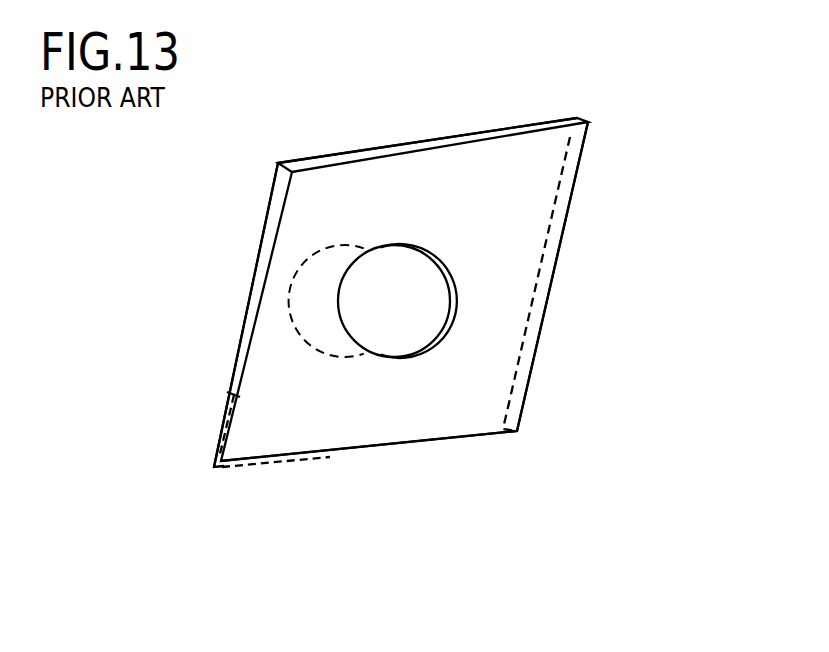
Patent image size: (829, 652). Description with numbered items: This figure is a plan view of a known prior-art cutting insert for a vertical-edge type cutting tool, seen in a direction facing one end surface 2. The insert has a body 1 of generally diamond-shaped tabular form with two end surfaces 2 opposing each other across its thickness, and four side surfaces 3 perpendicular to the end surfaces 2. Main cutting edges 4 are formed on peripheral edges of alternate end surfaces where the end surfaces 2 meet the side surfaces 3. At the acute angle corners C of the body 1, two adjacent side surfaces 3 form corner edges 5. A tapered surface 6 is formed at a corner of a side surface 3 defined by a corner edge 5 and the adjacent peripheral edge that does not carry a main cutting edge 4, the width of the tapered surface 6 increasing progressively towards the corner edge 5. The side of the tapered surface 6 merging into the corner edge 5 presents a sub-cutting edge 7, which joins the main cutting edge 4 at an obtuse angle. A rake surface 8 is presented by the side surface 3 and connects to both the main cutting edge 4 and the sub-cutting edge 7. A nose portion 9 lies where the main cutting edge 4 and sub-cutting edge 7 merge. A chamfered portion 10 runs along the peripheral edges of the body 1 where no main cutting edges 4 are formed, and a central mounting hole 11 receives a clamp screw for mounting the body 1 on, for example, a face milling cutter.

The body 1 is at (598, 117).
The end surface 2 is at (548, 190).
The side surface 3 is at (407, 141).
The main cutting edge 4 is at (238, 393).
The corner edge 5 is at (588, 120).
The tapered surface 6 is at (210, 457).
The sub-cutting edge 7 is at (210, 470).
The rake surface 8 is at (212, 450).
The nose portion 9 is at (234, 454).
The chamfered portion 10 is at (215, 417).
The mounting hole 11 is at (450, 302).
The acute angle corner C is at (589, 140).